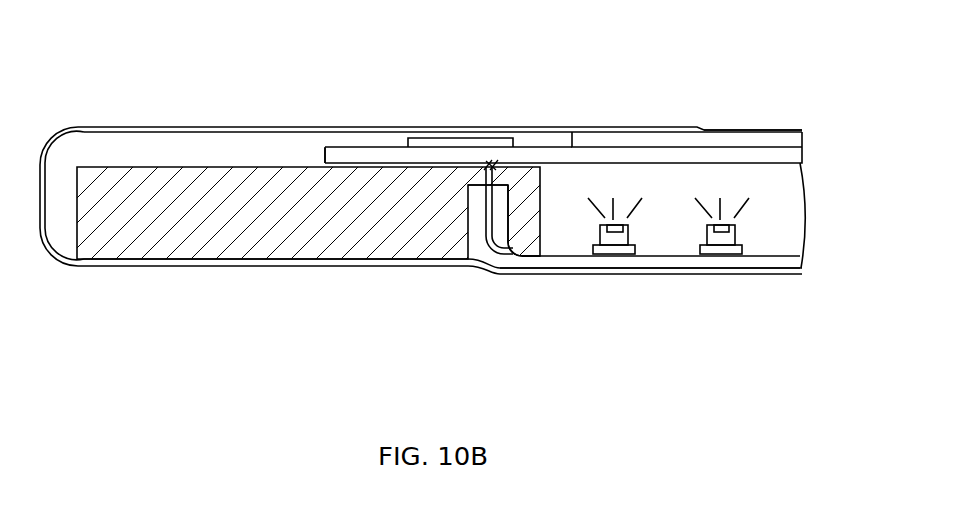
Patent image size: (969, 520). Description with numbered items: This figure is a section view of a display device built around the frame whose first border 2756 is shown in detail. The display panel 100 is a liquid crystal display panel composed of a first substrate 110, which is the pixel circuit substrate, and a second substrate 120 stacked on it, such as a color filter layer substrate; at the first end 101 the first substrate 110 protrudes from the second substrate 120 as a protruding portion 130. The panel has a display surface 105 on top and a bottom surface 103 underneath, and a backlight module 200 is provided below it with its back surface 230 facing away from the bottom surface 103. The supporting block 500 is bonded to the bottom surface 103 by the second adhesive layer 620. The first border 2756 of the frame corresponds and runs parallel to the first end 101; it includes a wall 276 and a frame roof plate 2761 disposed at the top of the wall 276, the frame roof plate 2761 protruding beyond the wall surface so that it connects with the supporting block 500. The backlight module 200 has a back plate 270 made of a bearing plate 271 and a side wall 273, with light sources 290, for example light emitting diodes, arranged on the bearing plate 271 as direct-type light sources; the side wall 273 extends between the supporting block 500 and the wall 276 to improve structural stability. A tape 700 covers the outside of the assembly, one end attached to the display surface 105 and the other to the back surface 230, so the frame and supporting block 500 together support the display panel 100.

The tape 700 is at (210, 127).
The supporting block 500 is at (226, 236).
The protruding portion 130 is at (432, 156).
The first end 101 is at (318, 161).
The second adhesive layer 620 is at (398, 148).
The display panel 100 is at (727, 109).
The second substrate 120 is at (802, 139).
The first substrate 110 is at (790, 157).
The display surface 105 is at (748, 128).
The first border 2756 is at (573, 131).
The frame roof plate 2761 is at (498, 163).
The wall 276 is at (528, 210).
The bottom surface 103 is at (485, 250).
The backlight module 200 is at (670, 273).
The back plate 270 is at (643, 275).
The side wall 273 is at (498, 215).
The bearing plate 271 is at (648, 262).
The back surface 230 is at (689, 272).
The light sources 290 is at (723, 238).